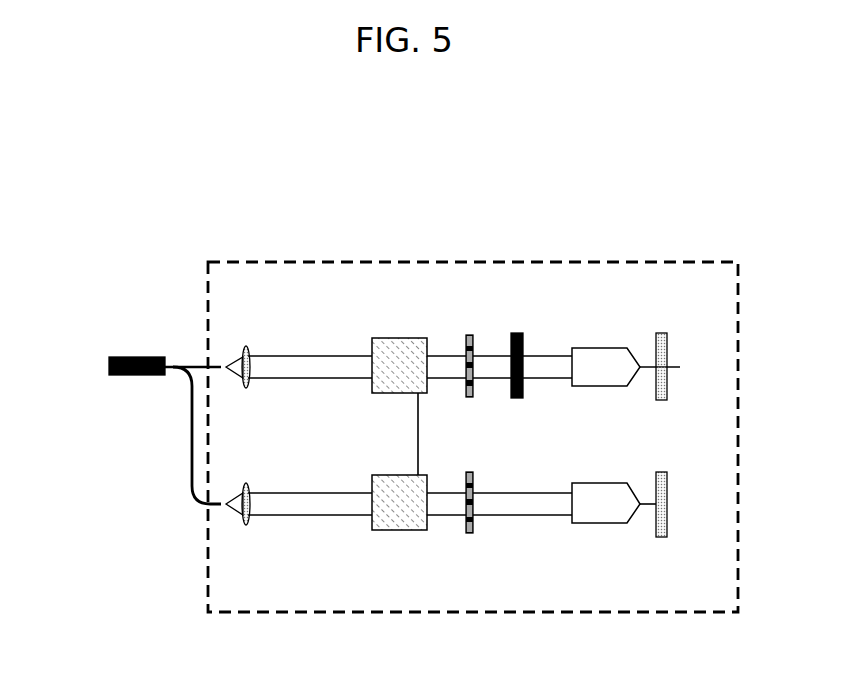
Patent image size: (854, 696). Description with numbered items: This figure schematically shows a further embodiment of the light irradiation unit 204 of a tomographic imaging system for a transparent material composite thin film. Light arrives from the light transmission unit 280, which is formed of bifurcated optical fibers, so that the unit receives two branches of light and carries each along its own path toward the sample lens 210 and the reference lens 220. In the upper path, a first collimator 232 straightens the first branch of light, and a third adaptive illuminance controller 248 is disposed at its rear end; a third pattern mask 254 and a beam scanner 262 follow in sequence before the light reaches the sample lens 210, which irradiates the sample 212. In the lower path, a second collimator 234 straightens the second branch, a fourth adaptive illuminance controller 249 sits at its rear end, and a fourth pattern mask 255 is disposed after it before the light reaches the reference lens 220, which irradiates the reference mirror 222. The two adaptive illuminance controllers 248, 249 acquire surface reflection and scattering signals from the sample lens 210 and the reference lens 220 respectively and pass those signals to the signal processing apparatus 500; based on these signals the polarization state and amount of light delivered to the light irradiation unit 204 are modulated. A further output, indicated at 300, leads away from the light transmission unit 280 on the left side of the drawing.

The light irradiation unit 204 is at (489, 200).
The sample lens 210 is at (598, 348).
The sample 212 is at (667, 392).
The reference lens 220 is at (608, 523).
The reference mirror 222 is at (667, 527).
The first collimator 232 is at (250, 345).
The second collimator 234 is at (249, 525).
The third adaptive illuminance controller 248 is at (398, 338).
The fourth adaptive illuminance controller 249 is at (384, 530).
The third pattern mask 254 is at (469, 335).
The fourth pattern mask 255 is at (470, 534).
The beam scanner 262 is at (516, 333).
The light transmission unit 280 is at (137, 357).
The output to sensor 300 is at (109, 367).
The signal processing apparatus 500 is at (399, 530).